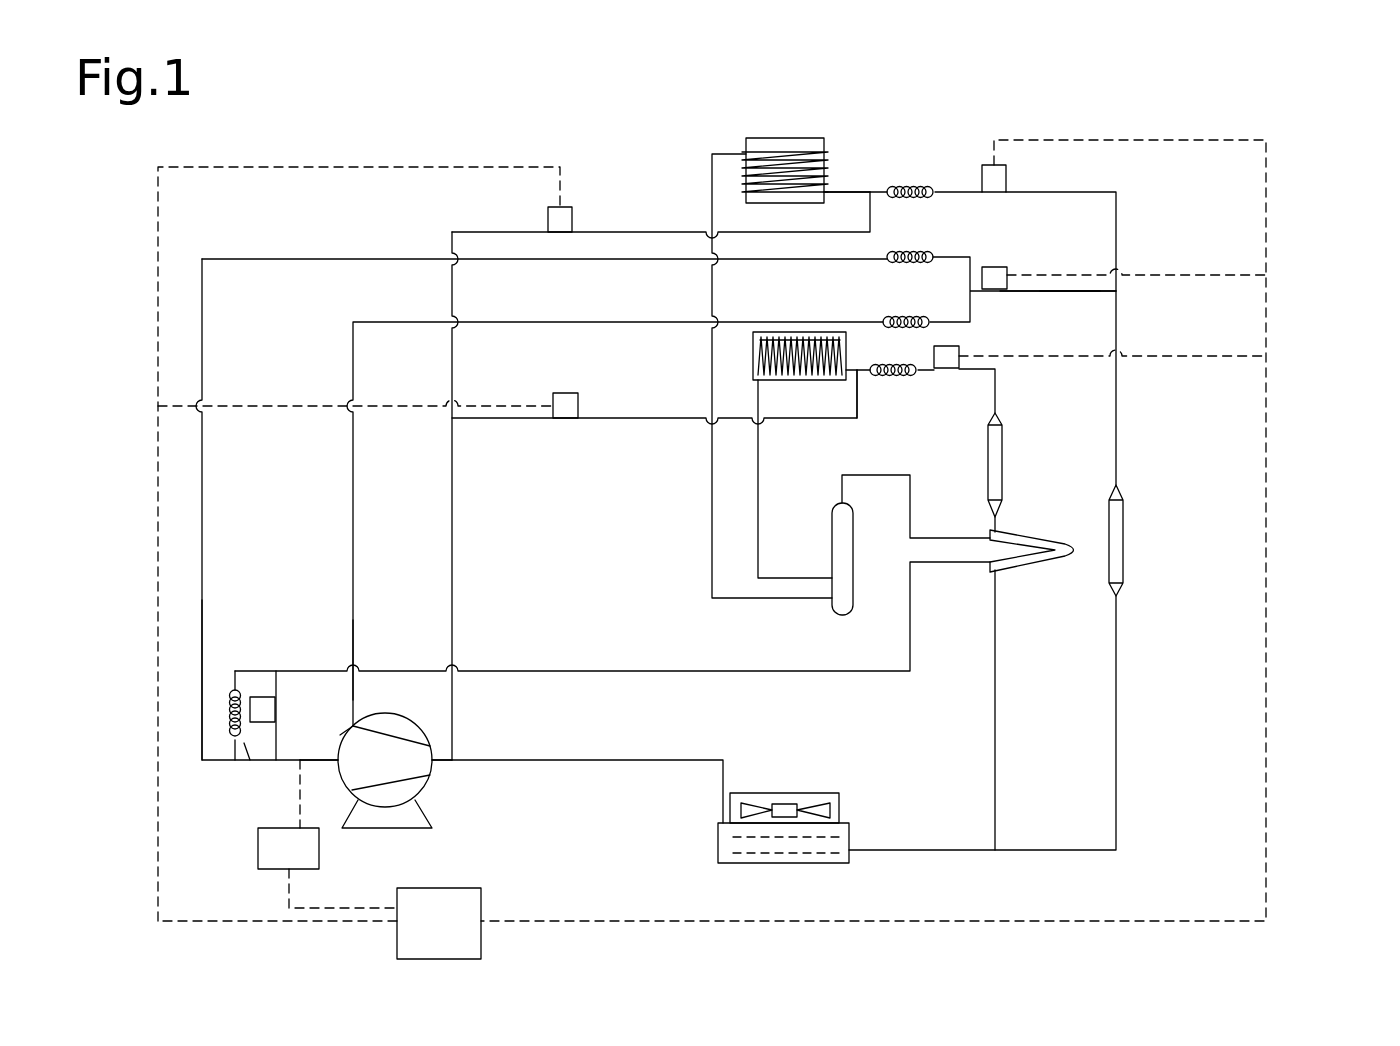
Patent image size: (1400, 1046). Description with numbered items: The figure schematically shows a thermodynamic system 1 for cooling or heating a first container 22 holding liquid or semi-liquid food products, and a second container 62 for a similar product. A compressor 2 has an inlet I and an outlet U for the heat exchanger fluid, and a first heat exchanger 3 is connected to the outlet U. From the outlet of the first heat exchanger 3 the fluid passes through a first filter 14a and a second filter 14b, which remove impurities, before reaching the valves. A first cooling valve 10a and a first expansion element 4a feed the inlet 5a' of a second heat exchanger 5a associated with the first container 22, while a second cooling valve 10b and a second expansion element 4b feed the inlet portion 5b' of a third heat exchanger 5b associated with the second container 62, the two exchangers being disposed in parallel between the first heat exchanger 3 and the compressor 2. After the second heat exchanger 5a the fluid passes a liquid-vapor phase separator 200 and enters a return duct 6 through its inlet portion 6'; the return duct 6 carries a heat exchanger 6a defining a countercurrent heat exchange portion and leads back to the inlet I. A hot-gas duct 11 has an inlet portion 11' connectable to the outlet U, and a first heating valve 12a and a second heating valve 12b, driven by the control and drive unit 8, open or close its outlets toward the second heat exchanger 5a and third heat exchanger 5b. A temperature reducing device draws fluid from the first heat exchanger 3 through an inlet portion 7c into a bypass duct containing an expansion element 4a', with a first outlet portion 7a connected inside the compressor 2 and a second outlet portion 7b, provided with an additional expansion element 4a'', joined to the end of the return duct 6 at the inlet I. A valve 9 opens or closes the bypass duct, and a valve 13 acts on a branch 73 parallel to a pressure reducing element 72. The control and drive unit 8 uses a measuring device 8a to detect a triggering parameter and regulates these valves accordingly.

The thermodynamic system 1 is at (1279, 808).
The compressor 2 is at (446, 802).
The first heat exchanger 3 is at (836, 870).
The first expansion element 4a is at (912, 429).
The expansion element 4a' is at (887, 301).
The additional expansion element 4a'' is at (938, 232).
The second expansion element 4b is at (905, 187).
The second heat exchanger 5a is at (800, 425).
The inlet of second heat exchanger 5a' is at (880, 411).
The third heat exchanger 5b is at (746, 137).
The inlet portion of third heat exchanger 5b' is at (856, 149).
The return duct 6 is at (612, 573).
The inlet portion of return duct 6' is at (697, 506).
The heat exchanger of return duct 6a is at (1040, 572).
The first outlet portion of bypass duct 7a is at (353, 501).
The second outlet portion of bypass duct 7b is at (202, 696).
The inlet portion of bypass duct 7c is at (1040, 293).
The control and drive unit 8 is at (439, 923).
The measuring device 8a is at (327, 834).
The valve 9 is at (1124, 249).
The first cooling valve 10a is at (948, 372).
The second cooling valve 10b is at (988, 178).
The hot-gas duct 11 is at (489, 468).
The inlet portion of hot-gas duct 11' is at (519, 719).
The first heating valve 12a is at (568, 405).
The second heating valve 12b is at (565, 220).
The valve 13 is at (287, 658).
The first filter 14a is at (1002, 452).
The second filter 14b is at (1112, 537).
The first container 22 is at (806, 330).
The second container 62 is at (790, 128).
The pressure reducing element 72 is at (224, 740).
The branch 73 is at (284, 745).
The liquid-vapor phase separator 200 is at (828, 620).
The inlet of compressor I is at (346, 725).
The outlet of compressor U is at (440, 770).